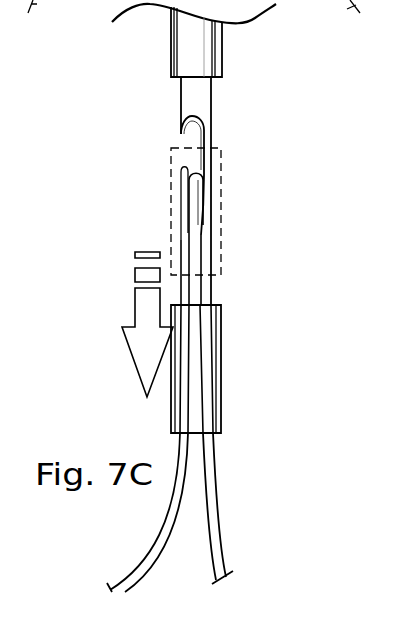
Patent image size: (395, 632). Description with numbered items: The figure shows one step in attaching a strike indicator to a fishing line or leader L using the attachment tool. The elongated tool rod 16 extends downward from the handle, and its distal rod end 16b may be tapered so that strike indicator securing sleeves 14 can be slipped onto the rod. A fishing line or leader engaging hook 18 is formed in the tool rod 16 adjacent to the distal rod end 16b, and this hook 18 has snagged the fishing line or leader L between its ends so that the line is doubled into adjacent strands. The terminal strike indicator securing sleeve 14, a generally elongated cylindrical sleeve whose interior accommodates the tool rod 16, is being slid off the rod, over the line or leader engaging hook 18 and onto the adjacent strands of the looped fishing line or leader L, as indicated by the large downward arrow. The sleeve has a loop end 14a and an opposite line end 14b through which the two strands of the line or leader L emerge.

The strike indicator securing sleeve 14 is at (221, 193).
The loop end 14a is at (213, 303).
The line end 14b is at (213, 435).
The tool rod 16 is at (200, 93).
The distal rod end 16b is at (197, 230).
The fishing line or leader engaging hook 18 is at (195, 141).
The fishing line or leader L is at (222, 548).